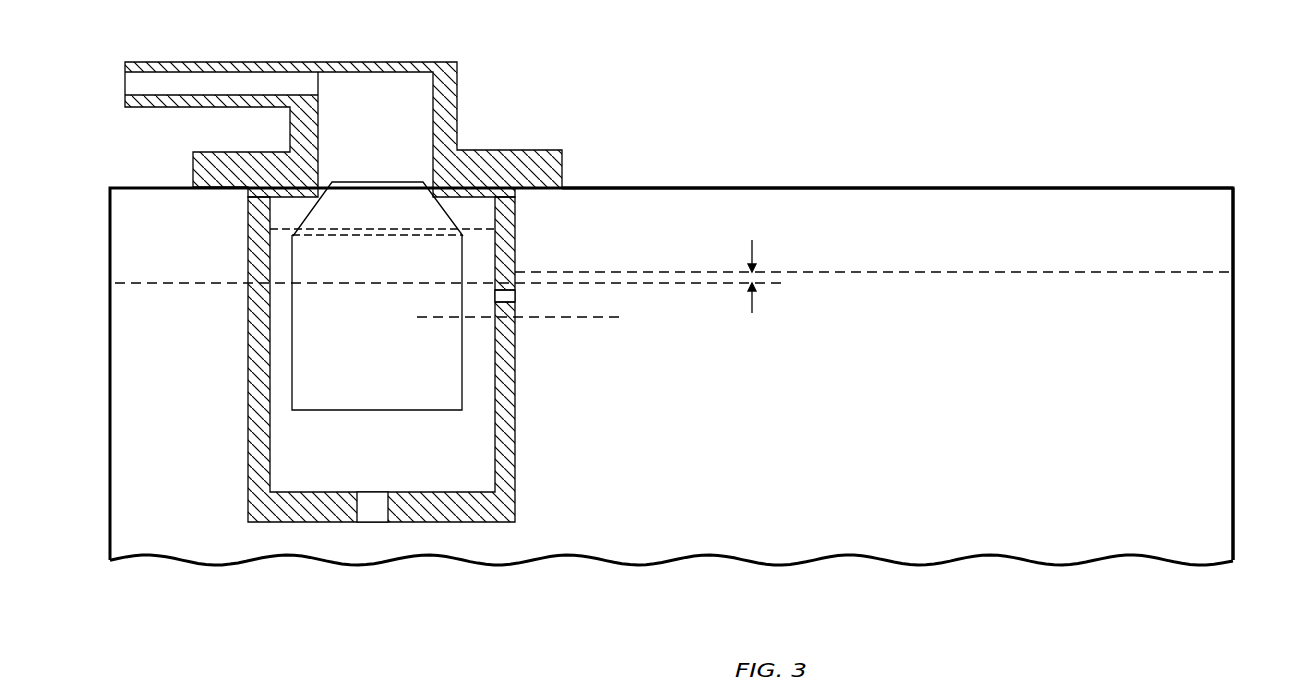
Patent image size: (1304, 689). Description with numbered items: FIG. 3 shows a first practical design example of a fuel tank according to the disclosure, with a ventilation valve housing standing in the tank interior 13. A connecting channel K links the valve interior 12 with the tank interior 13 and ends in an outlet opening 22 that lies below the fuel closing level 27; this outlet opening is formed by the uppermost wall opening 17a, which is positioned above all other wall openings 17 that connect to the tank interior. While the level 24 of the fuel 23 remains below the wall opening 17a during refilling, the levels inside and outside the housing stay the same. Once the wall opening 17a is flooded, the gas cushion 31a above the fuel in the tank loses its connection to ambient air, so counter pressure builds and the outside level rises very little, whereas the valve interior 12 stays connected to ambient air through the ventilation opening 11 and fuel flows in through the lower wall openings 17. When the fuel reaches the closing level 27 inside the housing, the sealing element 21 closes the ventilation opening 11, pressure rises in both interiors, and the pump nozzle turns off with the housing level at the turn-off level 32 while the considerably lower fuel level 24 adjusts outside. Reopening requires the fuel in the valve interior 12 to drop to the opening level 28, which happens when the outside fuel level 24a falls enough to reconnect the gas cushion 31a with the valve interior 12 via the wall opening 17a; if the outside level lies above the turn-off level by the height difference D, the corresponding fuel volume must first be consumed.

The ventilation opening 11 is at (388, 112).
The valve interior 12 is at (282, 265).
The tank interior 13 is at (998, 516).
The wall openings 17 is at (370, 510).
The uppermost wall opening 17a is at (595, 347).
The connecting channel K is at (595, 347).
The outlet opening 22 is at (517, 292).
The sealing element 21 is at (415, 188).
The fuel 23 is at (1175, 495).
The fuel level 24 is at (605, 317).
The fuel level 24a is at (148, 282).
The fuel closing level 27 is at (378, 233).
The opening level 28 is at (385, 283).
The gas cushion 31a is at (992, 240).
The turn-off level 32 is at (365, 233).
The height difference D is at (752, 256).